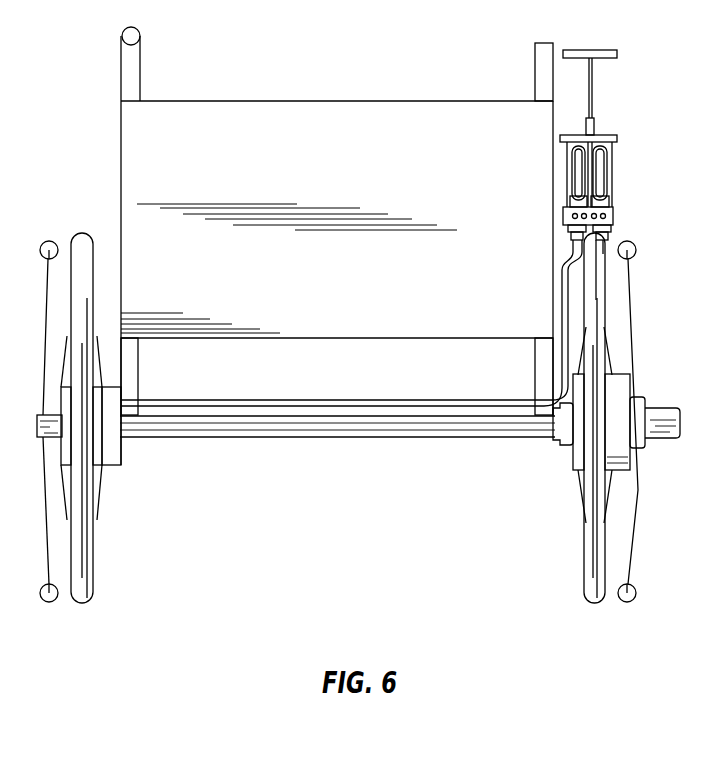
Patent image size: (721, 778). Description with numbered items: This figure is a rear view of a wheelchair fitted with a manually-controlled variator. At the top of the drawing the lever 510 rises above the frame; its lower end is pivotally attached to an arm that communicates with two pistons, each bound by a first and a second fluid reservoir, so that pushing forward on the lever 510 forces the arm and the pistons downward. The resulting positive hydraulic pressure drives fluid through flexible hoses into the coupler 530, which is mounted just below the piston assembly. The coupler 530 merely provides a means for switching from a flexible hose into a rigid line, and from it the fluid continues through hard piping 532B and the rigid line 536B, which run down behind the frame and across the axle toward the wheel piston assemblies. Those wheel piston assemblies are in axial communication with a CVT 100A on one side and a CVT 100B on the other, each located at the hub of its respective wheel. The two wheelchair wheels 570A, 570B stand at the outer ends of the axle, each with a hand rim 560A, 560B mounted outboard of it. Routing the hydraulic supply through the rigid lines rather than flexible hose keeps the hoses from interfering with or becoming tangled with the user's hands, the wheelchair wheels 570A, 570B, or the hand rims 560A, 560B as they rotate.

The lever 510 is at (590, 82).
The coupler 530 is at (563, 218).
The hard piping 532B is at (325, 400).
The rigid line 536B is at (407, 406).
The CVT 100A is at (615, 292).
The CVT 100B is at (110, 466).
The hand rim 560A is at (628, 602).
The hand rim 560B is at (50, 604).
The wheelchair wheel 570A is at (590, 606).
The wheelchair wheel 570B is at (80, 605).